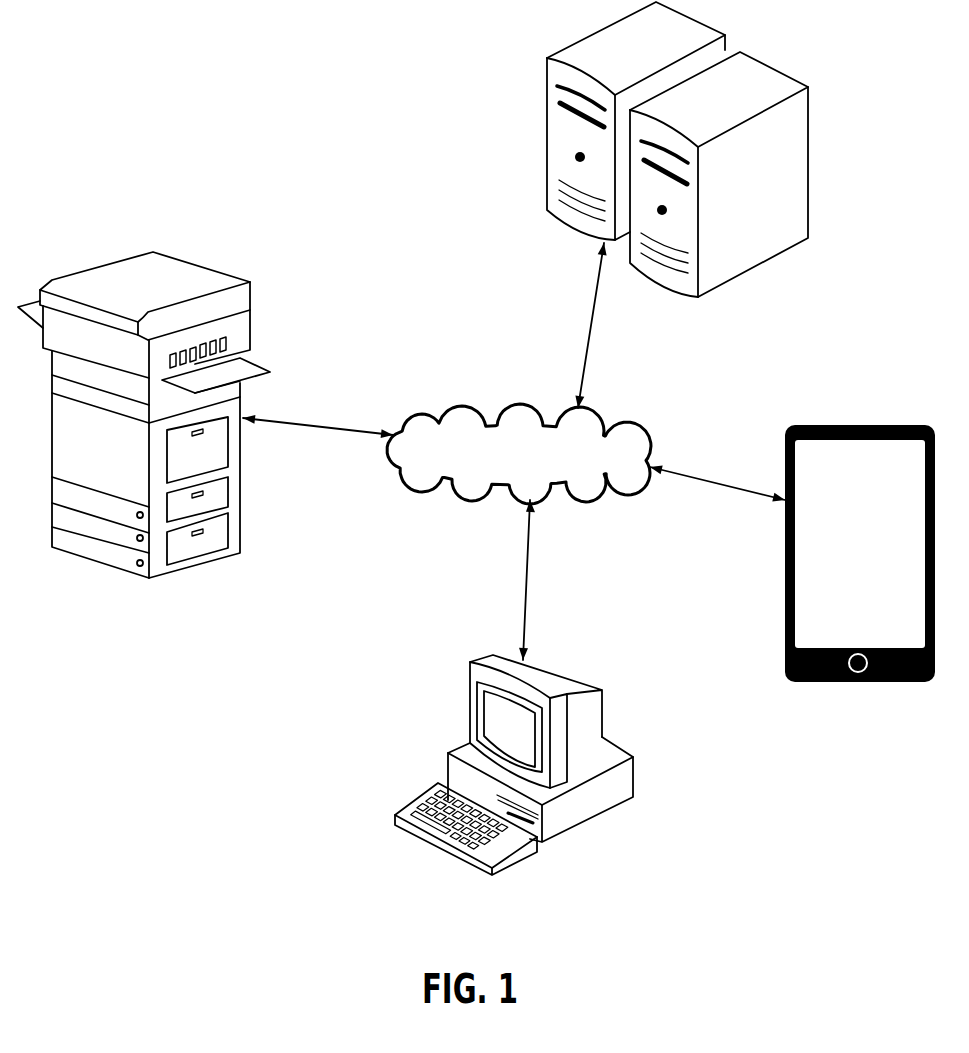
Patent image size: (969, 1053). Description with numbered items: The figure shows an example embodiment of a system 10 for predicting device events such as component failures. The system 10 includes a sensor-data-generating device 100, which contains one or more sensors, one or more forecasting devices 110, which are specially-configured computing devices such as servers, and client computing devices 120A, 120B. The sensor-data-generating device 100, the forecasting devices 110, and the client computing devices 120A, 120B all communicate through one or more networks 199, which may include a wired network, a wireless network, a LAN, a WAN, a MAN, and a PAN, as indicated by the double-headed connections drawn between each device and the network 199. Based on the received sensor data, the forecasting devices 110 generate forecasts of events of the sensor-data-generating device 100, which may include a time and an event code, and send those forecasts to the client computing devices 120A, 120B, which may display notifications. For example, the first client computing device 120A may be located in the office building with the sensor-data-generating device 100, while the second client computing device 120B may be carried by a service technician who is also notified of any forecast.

The system 10 is at (255, 60).
The sensor-data-generating device 100 is at (112, 263).
The forecasting device 110 is at (583, 39).
The network 199 is at (447, 408).
The first client computing device 120A is at (468, 702).
The second client computing device 120B is at (785, 573).